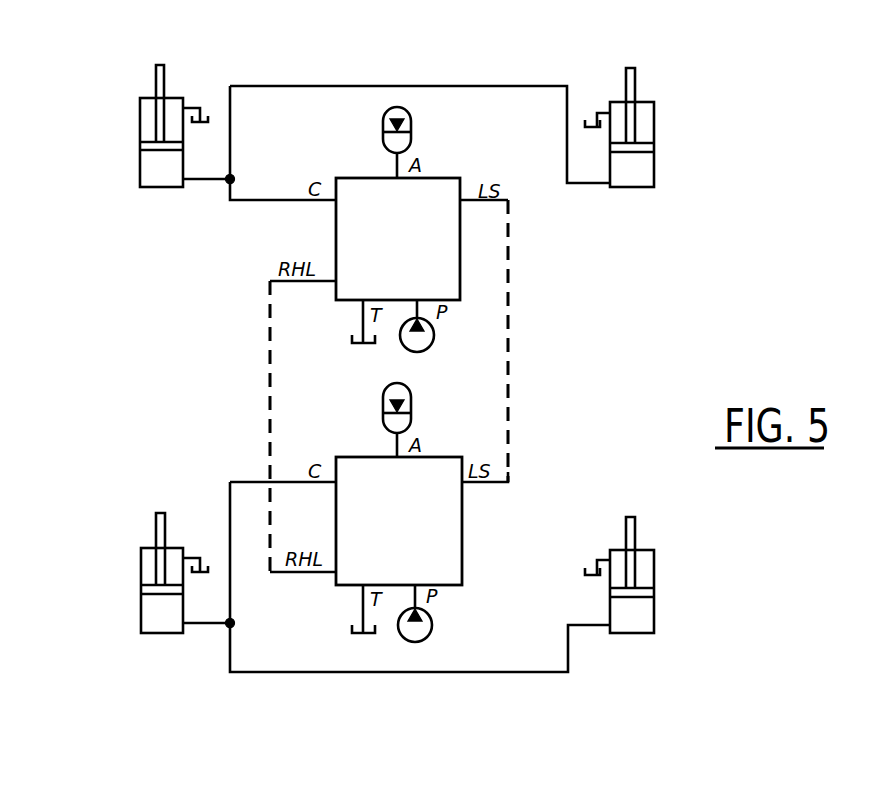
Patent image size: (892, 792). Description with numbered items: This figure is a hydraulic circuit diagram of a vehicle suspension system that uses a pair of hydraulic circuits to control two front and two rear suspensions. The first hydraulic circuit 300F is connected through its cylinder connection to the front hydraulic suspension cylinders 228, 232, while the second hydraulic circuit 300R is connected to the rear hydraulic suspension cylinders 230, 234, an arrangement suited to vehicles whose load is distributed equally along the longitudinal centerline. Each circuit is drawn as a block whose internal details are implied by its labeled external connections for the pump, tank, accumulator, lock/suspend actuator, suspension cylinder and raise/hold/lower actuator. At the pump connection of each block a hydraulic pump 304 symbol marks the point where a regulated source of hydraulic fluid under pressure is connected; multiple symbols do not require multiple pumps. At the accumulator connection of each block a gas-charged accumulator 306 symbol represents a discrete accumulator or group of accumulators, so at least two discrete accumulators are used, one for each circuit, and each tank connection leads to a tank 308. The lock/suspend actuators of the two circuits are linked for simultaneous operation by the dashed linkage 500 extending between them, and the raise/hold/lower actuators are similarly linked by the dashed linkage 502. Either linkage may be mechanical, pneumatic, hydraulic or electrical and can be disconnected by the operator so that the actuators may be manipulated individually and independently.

The front hydraulic suspension cylinder 228 is at (140, 163).
The rear hydraulic suspension cylinder 230 is at (141, 608).
The front hydraulic suspension cylinder 232 is at (656, 170).
The rear hydraulic suspension cylinder 234 is at (656, 617).
The first hydraulic circuit 300F is at (432, 239).
The second hydraulic circuit 300R is at (434, 521).
The hydraulic pump 304 is at (430, 348).
The gas-charged accumulator 306 is at (412, 118).
The tank 308 is at (352, 341).
The linkage 500 is at (510, 281).
The linkage 502 is at (268, 363).